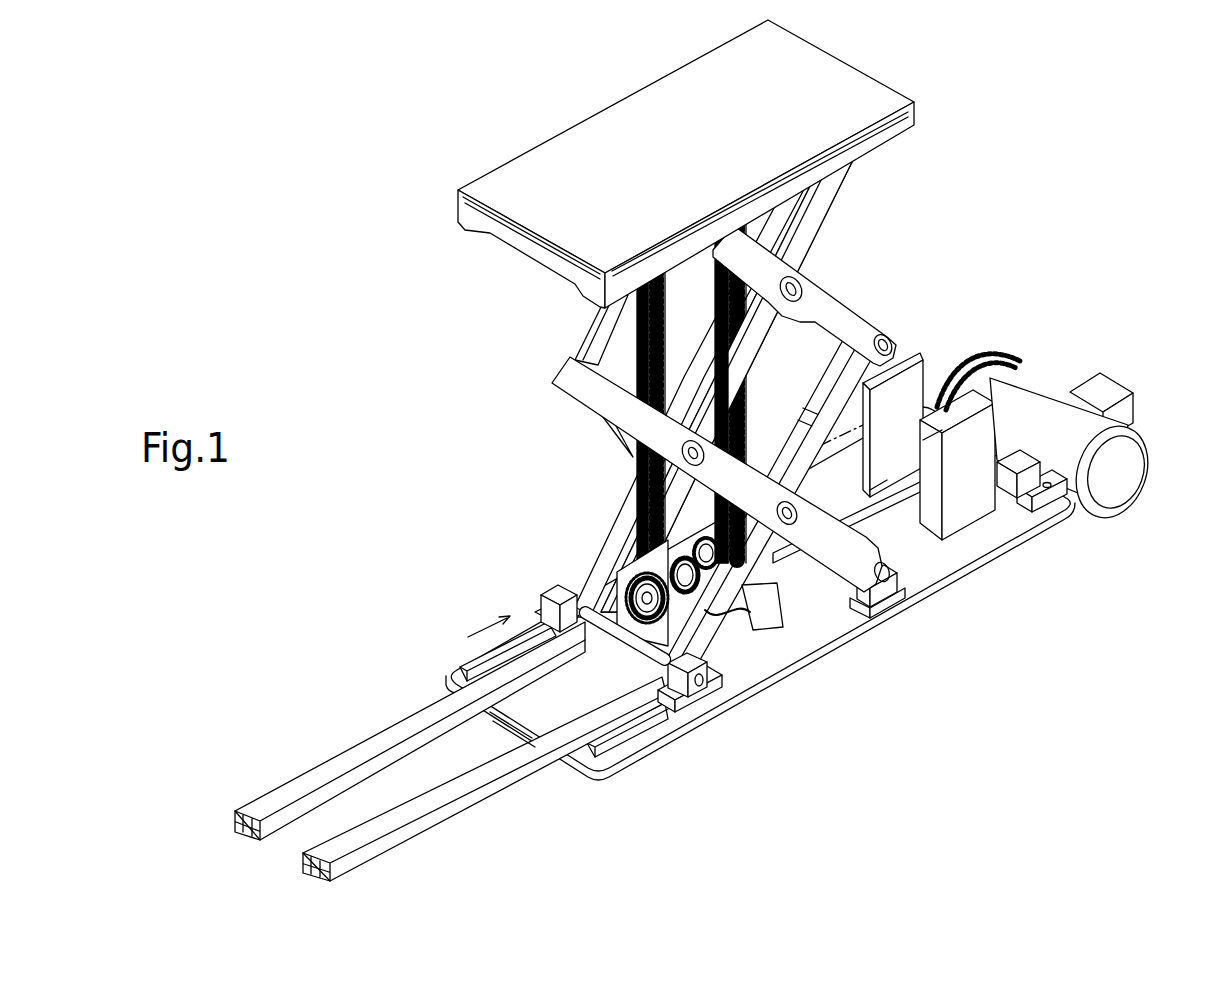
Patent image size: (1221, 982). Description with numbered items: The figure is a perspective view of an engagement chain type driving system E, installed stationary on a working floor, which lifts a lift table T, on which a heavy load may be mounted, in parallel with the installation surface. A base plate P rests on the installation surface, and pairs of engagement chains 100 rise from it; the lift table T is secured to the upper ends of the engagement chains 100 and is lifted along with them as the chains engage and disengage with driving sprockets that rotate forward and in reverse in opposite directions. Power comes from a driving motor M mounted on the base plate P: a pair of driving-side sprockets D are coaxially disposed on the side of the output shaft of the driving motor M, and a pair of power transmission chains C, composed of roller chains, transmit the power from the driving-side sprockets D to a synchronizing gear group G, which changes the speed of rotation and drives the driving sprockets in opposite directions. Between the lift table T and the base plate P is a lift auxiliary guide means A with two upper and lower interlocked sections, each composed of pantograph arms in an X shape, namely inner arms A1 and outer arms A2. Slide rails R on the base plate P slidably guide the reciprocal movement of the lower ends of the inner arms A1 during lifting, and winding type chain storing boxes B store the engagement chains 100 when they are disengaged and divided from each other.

The engagement chain type driving system E is at (402, 141).
The lift table T is at (669, 171).
The lift auxiliary guide means A is at (933, 172).
The inner arms A1 is at (828, 203).
The outer arms A2 is at (823, 280).
The engagement chain 100 is at (635, 345).
The synchronizing gear group G is at (630, 567).
The power transmission chains C is at (927, 420).
The driving-side sprockets D is at (1000, 358).
The driving motor M is at (1122, 488).
The winding type chain storing boxes B is at (962, 493).
The base plate P is at (818, 632).
The slide rails R is at (470, 667).